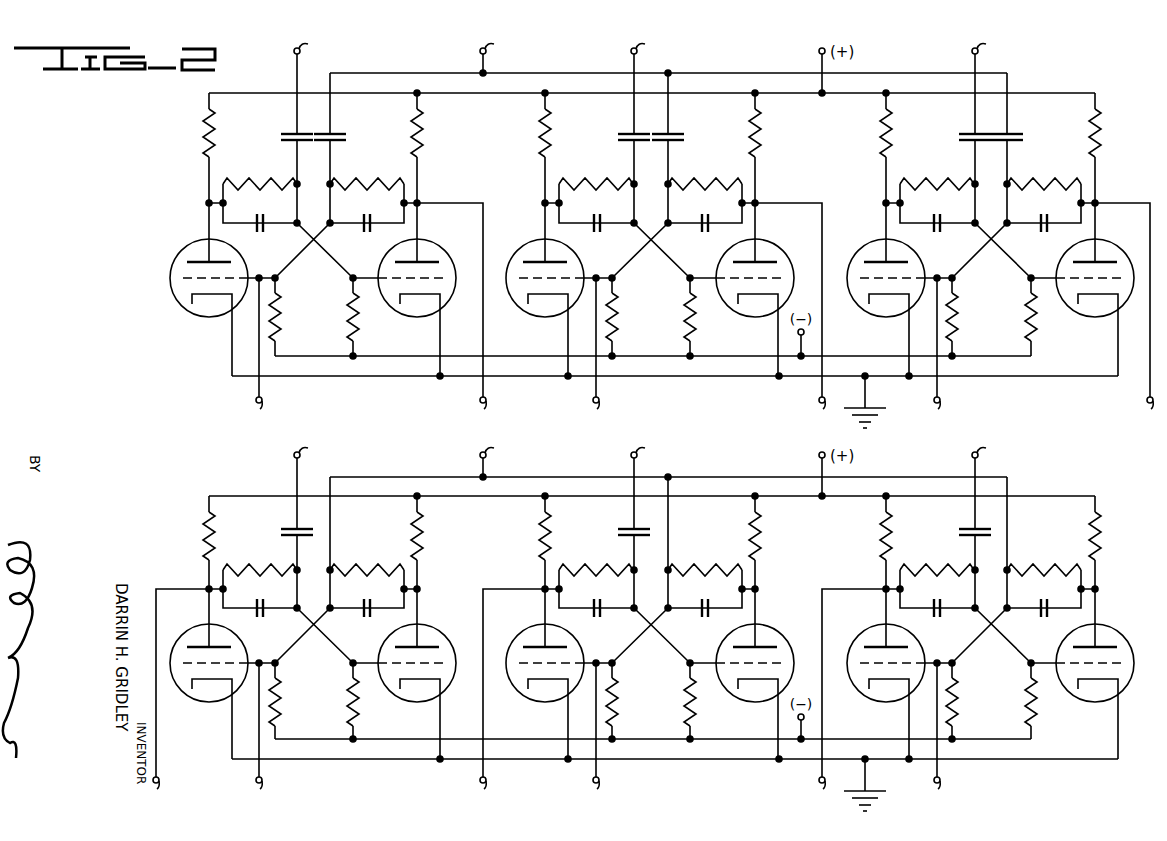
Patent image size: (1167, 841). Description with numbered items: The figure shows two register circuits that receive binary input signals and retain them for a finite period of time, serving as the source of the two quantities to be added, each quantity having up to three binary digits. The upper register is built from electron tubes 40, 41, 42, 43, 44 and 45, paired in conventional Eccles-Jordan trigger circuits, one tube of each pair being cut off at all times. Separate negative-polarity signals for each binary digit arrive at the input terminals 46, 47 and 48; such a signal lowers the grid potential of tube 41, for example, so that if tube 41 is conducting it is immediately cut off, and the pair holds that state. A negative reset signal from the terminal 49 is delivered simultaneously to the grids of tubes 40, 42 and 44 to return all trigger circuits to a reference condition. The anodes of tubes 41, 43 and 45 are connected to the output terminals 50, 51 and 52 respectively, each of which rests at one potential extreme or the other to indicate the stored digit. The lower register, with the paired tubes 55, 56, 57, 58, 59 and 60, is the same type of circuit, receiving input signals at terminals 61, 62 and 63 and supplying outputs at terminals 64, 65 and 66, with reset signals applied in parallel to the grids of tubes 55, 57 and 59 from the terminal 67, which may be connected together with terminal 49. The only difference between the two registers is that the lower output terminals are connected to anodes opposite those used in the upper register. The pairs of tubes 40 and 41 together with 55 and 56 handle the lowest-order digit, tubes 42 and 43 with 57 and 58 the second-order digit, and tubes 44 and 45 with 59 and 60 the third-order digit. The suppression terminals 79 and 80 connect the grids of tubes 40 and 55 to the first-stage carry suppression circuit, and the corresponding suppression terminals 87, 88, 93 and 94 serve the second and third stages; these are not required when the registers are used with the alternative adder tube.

The electron tube 40 is at (202, 317).
The electron tube 41 is at (410, 317).
The electron tube 42 is at (538, 317).
The electron tube 43 is at (748, 317).
The electron tube 44 is at (879, 317).
The electron tube 45 is at (1088, 317).
The input terminal 46 is at (310, 51).
The input terminal 47 is at (647, 51).
The input terminal 48 is at (988, 51).
The reset terminal 49 is at (496, 57).
The output terminal 50 is at (455, 316).
The output terminal 51 is at (793, 316).
The output terminal 52 is at (1127, 316).
The suppression terminal 79 is at (259, 354).
The suppression terminal 87 is at (596, 354).
The suppression terminal 93 is at (937, 354).
The electron tube 55 is at (202, 702).
The electron tube 56 is at (410, 702).
The electron tube 57 is at (538, 702).
The electron tube 58 is at (748, 702).
The electron tube 59 is at (879, 702).
The electron tube 60 is at (1088, 702).
The input terminal 61 is at (310, 455).
The input terminal 62 is at (647, 455).
The input terminal 63 is at (988, 455).
The reset terminal 67 is at (496, 461).
The output terminal 64 is at (177, 699).
The output terminal 65 is at (509, 699).
The output terminal 66 is at (849, 699).
The suppression terminal 80 is at (259, 736).
The suppression terminal 88 is at (596, 736).
The suppression terminal 94 is at (937, 736).